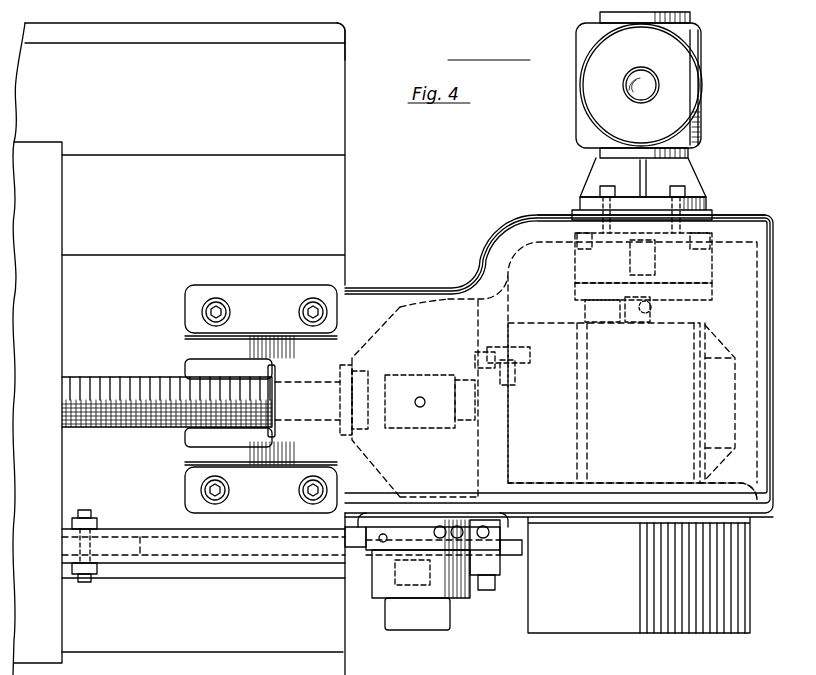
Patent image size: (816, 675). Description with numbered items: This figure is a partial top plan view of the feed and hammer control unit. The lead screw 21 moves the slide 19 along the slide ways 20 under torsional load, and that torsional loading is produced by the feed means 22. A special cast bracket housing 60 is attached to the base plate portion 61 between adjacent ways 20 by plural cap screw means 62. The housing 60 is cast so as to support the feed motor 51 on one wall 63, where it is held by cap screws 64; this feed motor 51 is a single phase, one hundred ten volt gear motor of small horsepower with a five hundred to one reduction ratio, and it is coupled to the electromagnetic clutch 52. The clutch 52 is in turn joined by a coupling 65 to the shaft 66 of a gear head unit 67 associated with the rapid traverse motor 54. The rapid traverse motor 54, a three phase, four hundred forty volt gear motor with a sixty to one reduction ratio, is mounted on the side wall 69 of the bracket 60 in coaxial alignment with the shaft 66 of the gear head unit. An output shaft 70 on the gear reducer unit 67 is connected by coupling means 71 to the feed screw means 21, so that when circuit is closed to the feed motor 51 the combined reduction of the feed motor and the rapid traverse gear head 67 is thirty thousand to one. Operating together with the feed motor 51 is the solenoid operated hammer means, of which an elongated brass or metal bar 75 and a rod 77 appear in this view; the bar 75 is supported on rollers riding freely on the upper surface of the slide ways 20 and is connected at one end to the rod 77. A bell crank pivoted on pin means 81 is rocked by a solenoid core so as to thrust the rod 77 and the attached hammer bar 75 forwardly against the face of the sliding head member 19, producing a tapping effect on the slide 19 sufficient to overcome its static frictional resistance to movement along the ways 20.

The slide 19 is at (70, 228).
The slide ways 20 is at (192, 172).
The lead screw 21 is at (109, 373).
The feed means 22 is at (512, 198).
The feed motor 51 is at (690, 85).
The electromagnetic clutch 52 is at (575, 278).
The rapid traverse motor 54 is at (627, 618).
The cast bracket housing 60 is at (418, 271).
The base plate portion 61 is at (343, 68).
The cap screw means 62 is at (309, 300).
The wall 63 is at (736, 222).
The cap screws 64 is at (682, 192).
The coupling 65 is at (658, 314).
The shaft 66 is at (622, 318).
The gear head unit 67 is at (684, 357).
The side wall 69 is at (755, 515).
The output shaft 70 is at (464, 378).
The coupling means 71 is at (456, 432).
The bar 75 is at (163, 563).
The rod 77 is at (357, 560).
The pin means 81 is at (484, 588).